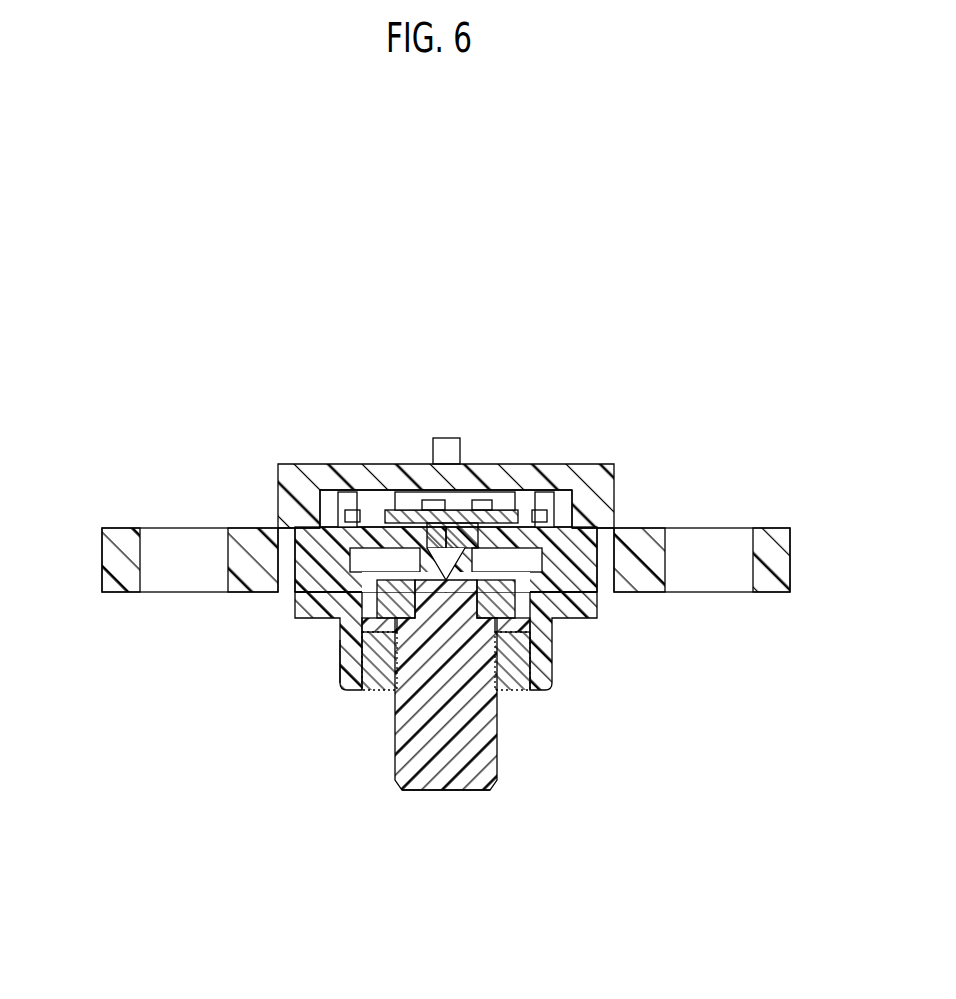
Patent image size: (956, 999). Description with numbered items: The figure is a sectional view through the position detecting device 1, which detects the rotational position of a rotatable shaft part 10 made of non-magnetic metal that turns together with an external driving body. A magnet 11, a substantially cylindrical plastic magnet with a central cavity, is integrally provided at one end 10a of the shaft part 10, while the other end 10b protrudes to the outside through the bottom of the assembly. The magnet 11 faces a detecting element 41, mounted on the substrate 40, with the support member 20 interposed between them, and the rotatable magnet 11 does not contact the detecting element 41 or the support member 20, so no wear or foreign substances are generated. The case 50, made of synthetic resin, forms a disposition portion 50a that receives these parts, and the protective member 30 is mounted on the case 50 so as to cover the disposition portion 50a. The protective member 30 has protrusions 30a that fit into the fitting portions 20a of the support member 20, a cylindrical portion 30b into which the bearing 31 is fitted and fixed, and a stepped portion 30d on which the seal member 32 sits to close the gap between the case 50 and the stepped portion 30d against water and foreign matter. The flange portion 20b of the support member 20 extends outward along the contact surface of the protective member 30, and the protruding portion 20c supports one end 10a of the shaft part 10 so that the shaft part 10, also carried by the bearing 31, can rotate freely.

The position detecting device 1 is at (330, 232).
The shaft part 10 is at (388, 793).
The one end of the shaft part 10a is at (528, 622).
The other end of the shaft part 10b is at (442, 780).
The magnet 11 is at (352, 628).
The support member 20 is at (505, 490).
The fitting portion 20a is at (340, 490).
The flange portion 20b is at (292, 505).
The protruding portion 20c is at (452, 617).
The protective member 30 is at (507, 743).
The protrusion 30a is at (300, 488).
The cylindrical portion 30b is at (342, 670).
The stepped portion 30d is at (318, 582).
The bearing 31 is at (382, 683).
The seal member 32 is at (305, 545).
The substrate 40 is at (465, 490).
The detecting element 41 is at (432, 490).
The case 50 is at (118, 508).
The disposition portion 50a is at (425, 475).